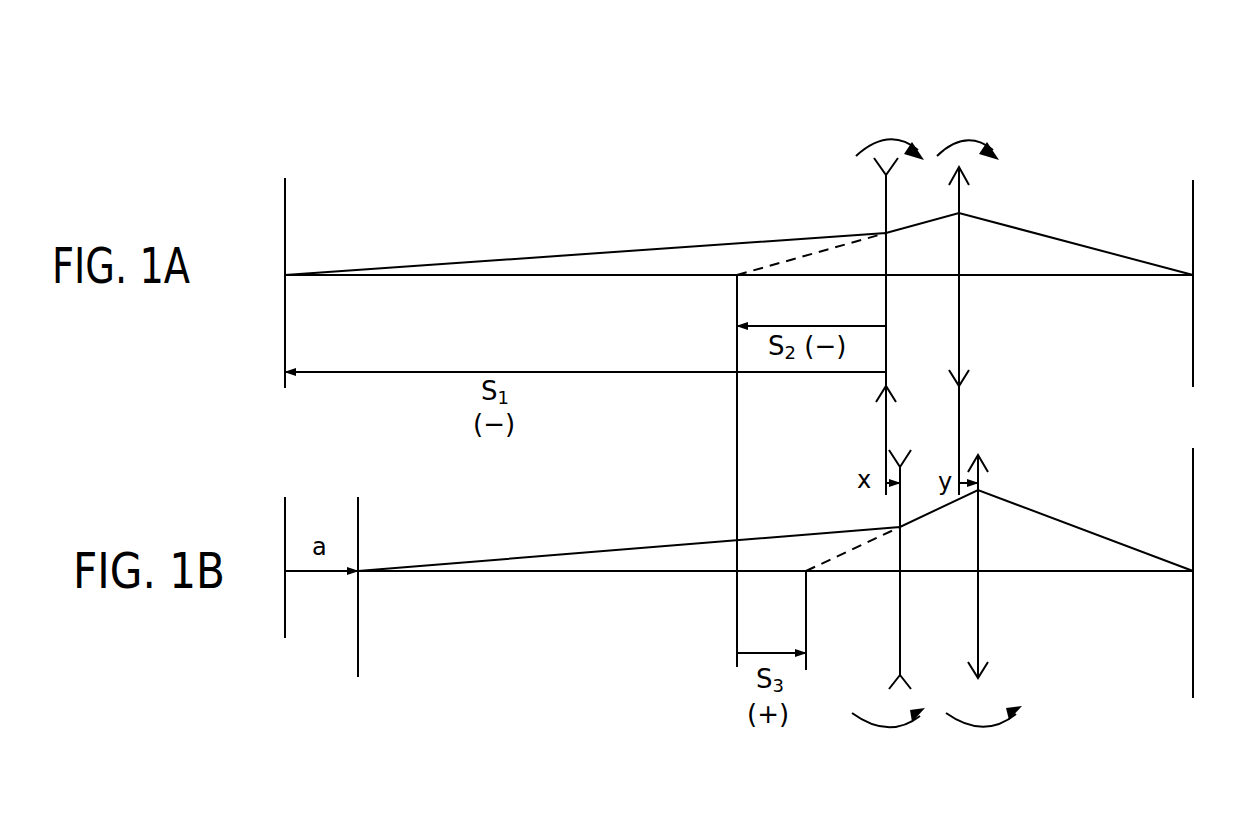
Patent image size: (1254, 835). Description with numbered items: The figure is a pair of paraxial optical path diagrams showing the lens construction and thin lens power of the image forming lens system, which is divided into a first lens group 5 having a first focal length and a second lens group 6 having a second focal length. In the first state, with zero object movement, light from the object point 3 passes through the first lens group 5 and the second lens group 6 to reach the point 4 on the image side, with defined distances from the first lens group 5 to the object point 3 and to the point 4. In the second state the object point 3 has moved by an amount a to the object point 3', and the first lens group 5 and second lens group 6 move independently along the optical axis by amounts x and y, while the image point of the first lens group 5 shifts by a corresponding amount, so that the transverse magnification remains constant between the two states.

In FIG. 1A, the object point 3 is at (286, 262).
In FIG. 1B, the object point 3' is at (365, 608).
In FIG. 1A, the object point 4 is at (1194, 261).
In FIG. 1B, the object point 4 is at (1194, 591).
In FIG. 1A, the first lens group 5 is at (888, 260).
In FIG. 1B, the first lens group 5 is at (888, 629).
In FIG. 1A, the second lens group 6 is at (970, 260).
In FIG. 1B, the second lens group 6 is at (984, 632).